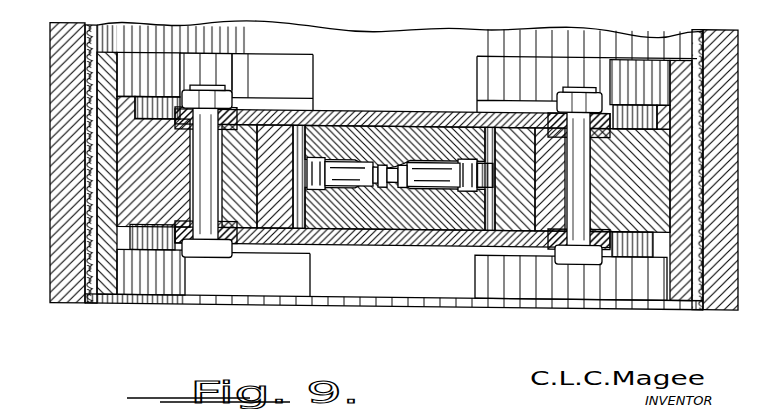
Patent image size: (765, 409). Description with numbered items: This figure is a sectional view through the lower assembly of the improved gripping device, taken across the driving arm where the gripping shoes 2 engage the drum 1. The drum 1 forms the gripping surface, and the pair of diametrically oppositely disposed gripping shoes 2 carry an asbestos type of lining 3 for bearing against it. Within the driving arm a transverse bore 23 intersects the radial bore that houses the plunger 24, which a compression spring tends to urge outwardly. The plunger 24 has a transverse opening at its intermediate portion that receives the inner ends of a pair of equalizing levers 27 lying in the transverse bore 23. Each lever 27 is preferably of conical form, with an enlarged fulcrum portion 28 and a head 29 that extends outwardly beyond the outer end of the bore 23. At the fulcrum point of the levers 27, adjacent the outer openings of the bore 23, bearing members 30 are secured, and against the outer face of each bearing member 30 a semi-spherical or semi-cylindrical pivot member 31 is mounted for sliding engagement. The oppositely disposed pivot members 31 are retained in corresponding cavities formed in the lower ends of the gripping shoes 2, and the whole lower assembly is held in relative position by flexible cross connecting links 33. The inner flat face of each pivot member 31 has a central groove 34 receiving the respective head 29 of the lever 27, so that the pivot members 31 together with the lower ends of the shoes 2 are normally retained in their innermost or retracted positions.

The drum 1 is at (58, 75).
The gripping shoes 2 is at (98, 160).
The lining 3 is at (90, 236).
The transverse bore 23 is at (362, 151).
The plunger 24 is at (397, 149).
The equalizing levers 27 is at (365, 225).
The fulcrum portion 28 is at (452, 227).
The head 29 is at (478, 123).
The bearing members 30 is at (313, 125).
The pivot members 31 is at (268, 137).
The cross connecting links 33 is at (425, 130).
The groove 34 is at (490, 128).